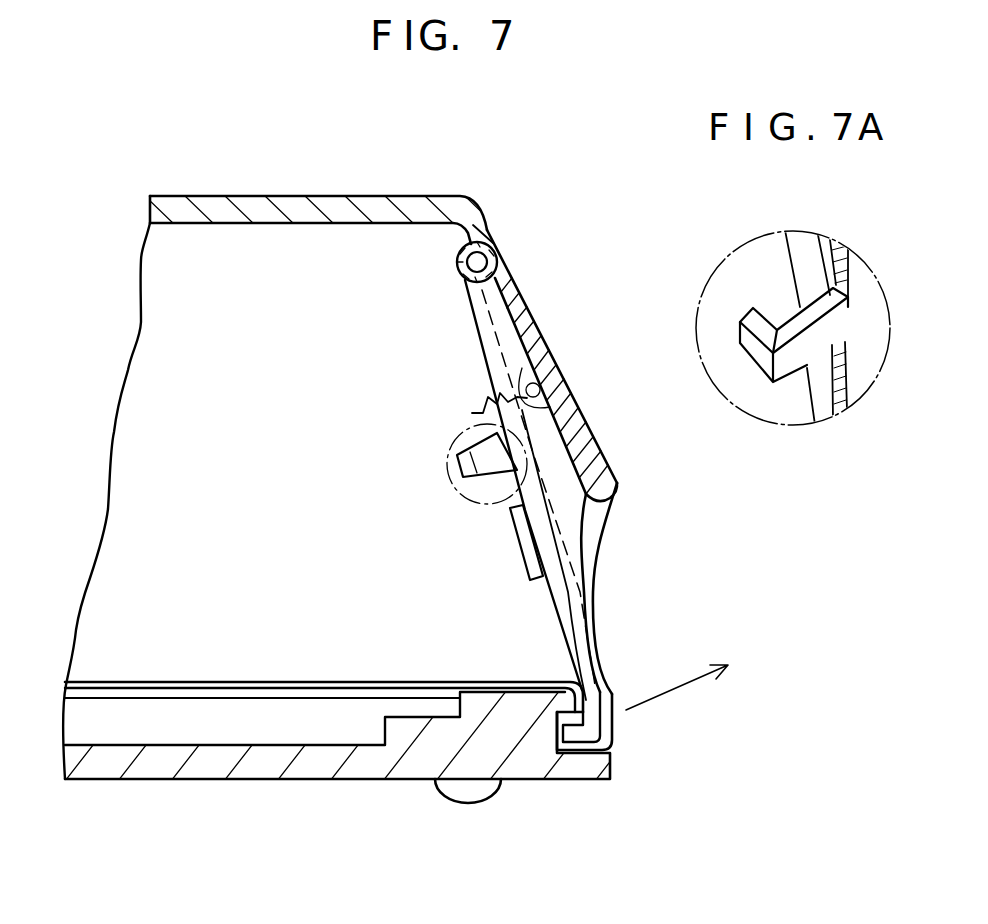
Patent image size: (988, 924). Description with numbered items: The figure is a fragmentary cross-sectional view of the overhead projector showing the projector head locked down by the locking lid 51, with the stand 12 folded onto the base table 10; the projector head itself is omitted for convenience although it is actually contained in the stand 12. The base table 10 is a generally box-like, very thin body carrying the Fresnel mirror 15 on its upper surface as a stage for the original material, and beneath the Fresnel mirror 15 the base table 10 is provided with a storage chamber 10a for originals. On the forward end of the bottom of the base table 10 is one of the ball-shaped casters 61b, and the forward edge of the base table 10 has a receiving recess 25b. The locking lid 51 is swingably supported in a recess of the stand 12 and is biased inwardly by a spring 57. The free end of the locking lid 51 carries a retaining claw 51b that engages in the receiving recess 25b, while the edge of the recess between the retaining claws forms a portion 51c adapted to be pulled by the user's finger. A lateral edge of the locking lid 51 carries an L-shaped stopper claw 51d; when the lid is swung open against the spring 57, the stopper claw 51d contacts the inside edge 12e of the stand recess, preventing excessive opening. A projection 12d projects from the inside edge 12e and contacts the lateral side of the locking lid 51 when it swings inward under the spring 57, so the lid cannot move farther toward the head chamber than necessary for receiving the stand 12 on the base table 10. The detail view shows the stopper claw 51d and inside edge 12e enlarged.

In FIG. 7, the base table 10 is at (365, 791).
In FIG. 7, the storage chamber 10a is at (178, 735).
In FIG. 7, the stand 12 is at (249, 175).
In FIG. 7, the projection 12d is at (518, 542).
In FIG. 7A, the inside edge 12e is at (762, 283).
In FIG. 7, the Fresnel mirror 15 is at (222, 687).
In FIG. 7, the receiving recess 25b is at (600, 690).
In FIG. 7, the locking lid 51 is at (586, 488).
In FIG. 7, the retaining claw 51b is at (612, 735).
In FIG. 7, the finger-pull portion 51c is at (590, 537).
In FIG. 7, the stopper claw 51d is at (465, 478).
In FIG. 7A, the stopper claw 51d is at (758, 365).
In FIG. 7, the spring 57 is at (455, 422).
In FIG. 7, the ball-shaped caster 61b is at (473, 803).